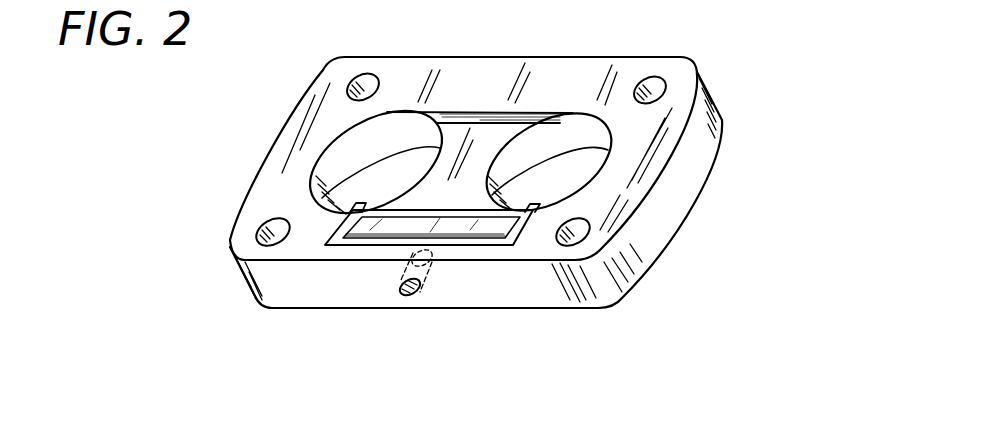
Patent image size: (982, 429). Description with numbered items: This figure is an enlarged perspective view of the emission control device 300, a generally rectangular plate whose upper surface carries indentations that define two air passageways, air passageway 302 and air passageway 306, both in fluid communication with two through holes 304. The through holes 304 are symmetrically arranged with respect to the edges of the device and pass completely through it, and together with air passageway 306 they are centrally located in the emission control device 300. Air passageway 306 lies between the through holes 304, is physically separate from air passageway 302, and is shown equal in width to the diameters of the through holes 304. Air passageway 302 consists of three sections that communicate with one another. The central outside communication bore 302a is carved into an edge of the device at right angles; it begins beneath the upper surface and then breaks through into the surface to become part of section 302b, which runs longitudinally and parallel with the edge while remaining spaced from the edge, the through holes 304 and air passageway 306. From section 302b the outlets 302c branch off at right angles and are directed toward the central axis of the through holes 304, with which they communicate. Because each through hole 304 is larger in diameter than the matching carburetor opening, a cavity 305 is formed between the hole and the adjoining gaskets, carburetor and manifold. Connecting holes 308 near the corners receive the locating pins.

The emission control device 300 is at (760, 117).
The air passageway 302 is at (392, 288).
The central outside communication bore 302a is at (413, 295).
The longitudinal section of air passageway 302b is at (445, 248).
The outlets 302c is at (327, 228).
The through holes 304 is at (573, 157).
The cavity 305 is at (447, 147).
The air passageway 306 is at (480, 137).
The connecting holes 308 is at (658, 92).